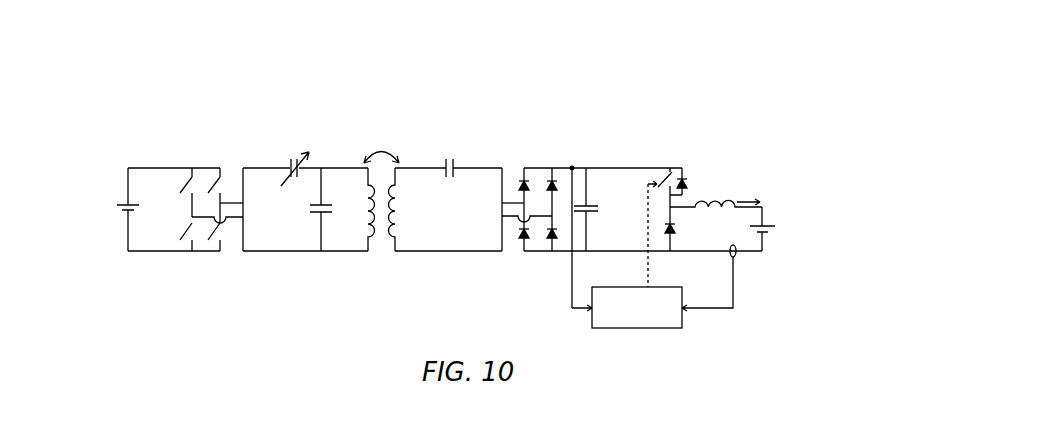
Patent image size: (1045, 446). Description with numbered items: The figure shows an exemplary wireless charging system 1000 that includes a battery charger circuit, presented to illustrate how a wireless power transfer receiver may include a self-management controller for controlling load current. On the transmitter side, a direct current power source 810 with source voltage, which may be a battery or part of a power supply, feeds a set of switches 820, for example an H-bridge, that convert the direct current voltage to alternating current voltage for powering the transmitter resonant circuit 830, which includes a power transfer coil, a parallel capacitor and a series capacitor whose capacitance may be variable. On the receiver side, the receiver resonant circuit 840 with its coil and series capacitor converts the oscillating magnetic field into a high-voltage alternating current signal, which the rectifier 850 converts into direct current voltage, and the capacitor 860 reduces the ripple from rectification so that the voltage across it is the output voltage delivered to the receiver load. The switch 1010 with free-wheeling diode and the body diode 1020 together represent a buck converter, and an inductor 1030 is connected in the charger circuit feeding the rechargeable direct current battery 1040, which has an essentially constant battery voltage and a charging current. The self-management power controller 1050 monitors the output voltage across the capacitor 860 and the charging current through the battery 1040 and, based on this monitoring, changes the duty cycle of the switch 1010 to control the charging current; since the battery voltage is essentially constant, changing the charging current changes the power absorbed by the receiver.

The wireless charging system 1000 is at (752, 36).
The direct current power source 810 is at (120, 170).
The set of switches 820 is at (201, 154).
The transmitter resonant circuit 830 is at (358, 122).
The receiver resonant circuit 840 is at (490, 122).
The rectifier 850 is at (558, 126).
The capacitor 860 is at (589, 157).
The switch Q1 1010 is at (688, 160).
The body diode 1020 is at (712, 193).
The inductor 1030 is at (672, 240).
The rechargeable DC battery 1040 is at (770, 210).
The self-management power controller 1050 is at (672, 328).